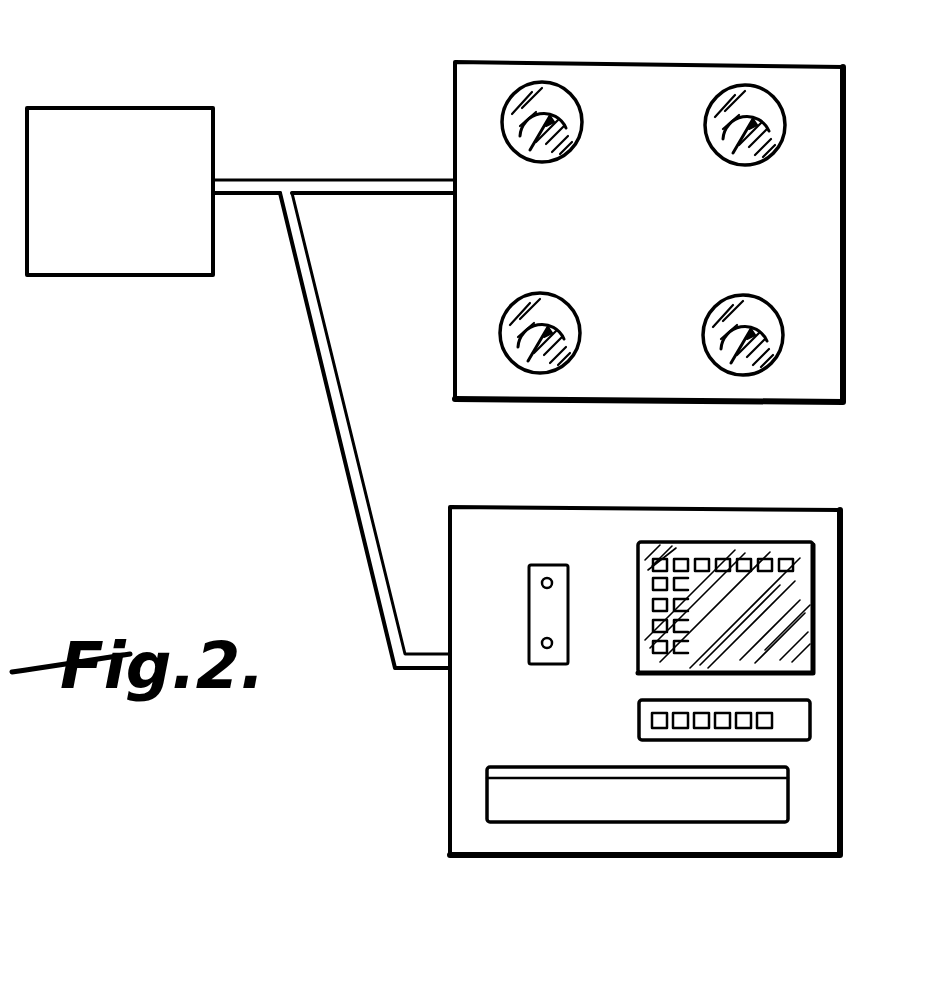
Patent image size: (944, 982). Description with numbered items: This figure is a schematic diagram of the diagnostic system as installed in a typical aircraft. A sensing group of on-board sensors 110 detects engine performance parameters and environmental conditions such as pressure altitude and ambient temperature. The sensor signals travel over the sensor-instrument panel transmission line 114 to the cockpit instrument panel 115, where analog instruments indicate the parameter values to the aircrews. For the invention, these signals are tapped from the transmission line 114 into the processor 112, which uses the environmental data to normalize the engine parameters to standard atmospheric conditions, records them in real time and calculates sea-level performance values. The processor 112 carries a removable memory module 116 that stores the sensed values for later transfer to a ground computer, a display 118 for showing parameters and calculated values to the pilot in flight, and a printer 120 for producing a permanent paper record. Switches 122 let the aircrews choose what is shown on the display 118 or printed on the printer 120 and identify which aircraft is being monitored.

The sensors 110 is at (150, 108).
The processor 112 is at (697, 506).
The sensor-instrument panel transmission line 114 is at (345, 440).
The cockpit instrument panel 115 is at (660, 62).
The memory module 116 is at (555, 565).
The display 118 is at (798, 591).
The printer 120 is at (593, 797).
The switches 122 is at (800, 718).